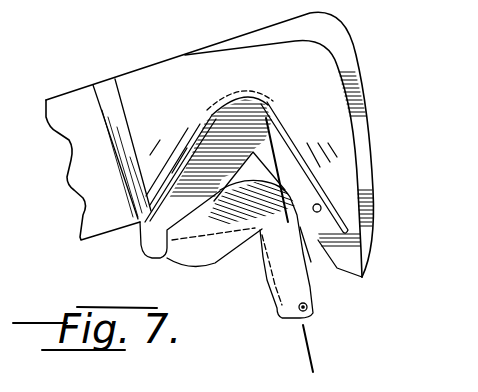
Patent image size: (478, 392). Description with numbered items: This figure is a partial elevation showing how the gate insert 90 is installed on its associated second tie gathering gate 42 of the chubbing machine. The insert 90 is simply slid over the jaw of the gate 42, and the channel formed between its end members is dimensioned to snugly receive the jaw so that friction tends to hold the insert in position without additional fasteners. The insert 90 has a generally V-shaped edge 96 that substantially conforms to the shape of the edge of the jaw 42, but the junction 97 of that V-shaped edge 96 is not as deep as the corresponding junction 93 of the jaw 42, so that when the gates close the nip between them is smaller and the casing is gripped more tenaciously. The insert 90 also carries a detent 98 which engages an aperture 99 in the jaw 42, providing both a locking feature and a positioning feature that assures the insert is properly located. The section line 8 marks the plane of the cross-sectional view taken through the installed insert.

The section line 8- 8 is at (252, 131).
The second tie gathering gate 42 is at (360, 100).
The insert plate 90 is at (325, 256).
The junction 93 is at (236, 173).
The V-shaped edge 96 is at (205, 276).
The junction 97 is at (253, 248).
The detent 98 is at (308, 308).
The aperture 99 is at (321, 207).